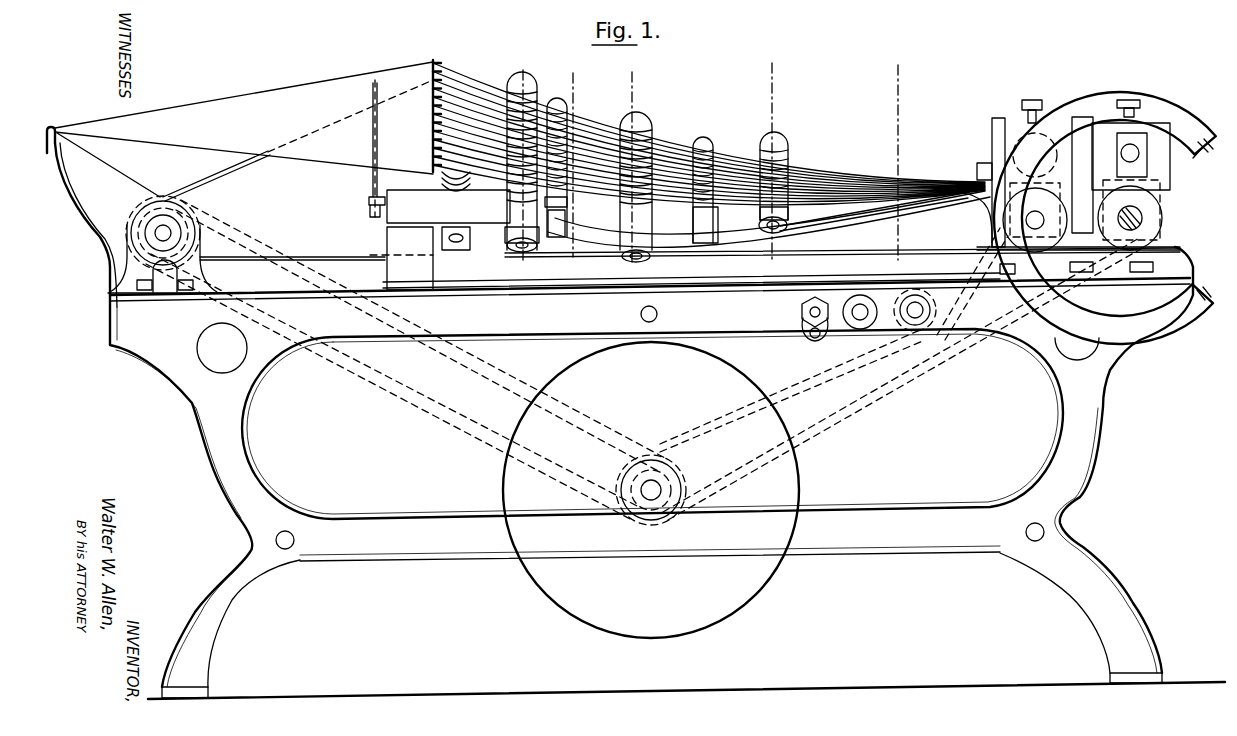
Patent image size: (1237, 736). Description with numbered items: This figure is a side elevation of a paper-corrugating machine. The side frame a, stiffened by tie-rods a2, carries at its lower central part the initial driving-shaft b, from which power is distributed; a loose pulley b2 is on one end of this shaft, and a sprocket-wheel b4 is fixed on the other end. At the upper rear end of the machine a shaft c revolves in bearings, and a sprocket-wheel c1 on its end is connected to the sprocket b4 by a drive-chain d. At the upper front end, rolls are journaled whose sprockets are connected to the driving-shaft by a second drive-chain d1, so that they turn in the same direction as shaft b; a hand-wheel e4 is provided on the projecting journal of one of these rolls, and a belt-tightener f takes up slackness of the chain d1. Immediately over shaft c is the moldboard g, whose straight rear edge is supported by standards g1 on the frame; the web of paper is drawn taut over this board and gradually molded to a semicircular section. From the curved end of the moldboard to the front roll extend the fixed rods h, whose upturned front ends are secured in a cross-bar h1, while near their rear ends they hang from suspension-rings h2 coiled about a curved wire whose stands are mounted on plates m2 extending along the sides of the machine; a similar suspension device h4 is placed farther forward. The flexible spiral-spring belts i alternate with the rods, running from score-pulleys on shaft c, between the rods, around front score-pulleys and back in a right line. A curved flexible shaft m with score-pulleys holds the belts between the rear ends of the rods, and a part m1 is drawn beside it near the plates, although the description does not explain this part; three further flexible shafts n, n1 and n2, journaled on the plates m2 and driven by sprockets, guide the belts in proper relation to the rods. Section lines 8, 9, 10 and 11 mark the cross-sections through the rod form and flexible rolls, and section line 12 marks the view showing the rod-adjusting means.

The side frame a is at (667, 473).
The tie-rods a2 is at (995, 589).
The initial driving-shaft b is at (652, 490).
The loose pulley b2 is at (651, 490).
The sprocket-wheel b4 is at (637, 502).
The shaft c is at (160, 230).
The sprocket-wheel c1 is at (130, 243).
The drive-chain d is at (604, 360).
The drive-chain d1 is at (907, 385).
The hand-wheel e4 is at (1143, 332).
The belt-tightener f is at (915, 330).
The moldboard g is at (240, 129).
The standards g1 is at (68, 200).
The fixed rods h is at (460, 93).
The cross-bar h1 is at (992, 168).
The suspension-rings h2 is at (556, 103).
The suspension device h4 is at (703, 140).
The flexible belts i is at (317, 258).
The flexible shaft m is at (473, 184).
The guide block m1 is at (476, 243).
The plates m2 is at (833, 232).
The flexible shaft n is at (507, 80).
The flexible shaft n1 is at (637, 112).
The flexible shaft n2 is at (787, 140).
The section line 8 8 is at (522, 167).
The section line 9 9 is at (633, 166).
The section line 10 10 is at (776, 164).
The section line 11 11 is at (901, 163).
The section line 12 12 is at (577, 166).